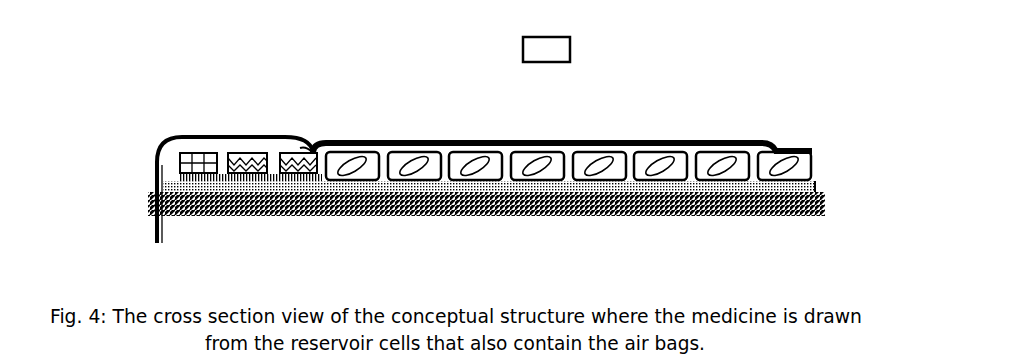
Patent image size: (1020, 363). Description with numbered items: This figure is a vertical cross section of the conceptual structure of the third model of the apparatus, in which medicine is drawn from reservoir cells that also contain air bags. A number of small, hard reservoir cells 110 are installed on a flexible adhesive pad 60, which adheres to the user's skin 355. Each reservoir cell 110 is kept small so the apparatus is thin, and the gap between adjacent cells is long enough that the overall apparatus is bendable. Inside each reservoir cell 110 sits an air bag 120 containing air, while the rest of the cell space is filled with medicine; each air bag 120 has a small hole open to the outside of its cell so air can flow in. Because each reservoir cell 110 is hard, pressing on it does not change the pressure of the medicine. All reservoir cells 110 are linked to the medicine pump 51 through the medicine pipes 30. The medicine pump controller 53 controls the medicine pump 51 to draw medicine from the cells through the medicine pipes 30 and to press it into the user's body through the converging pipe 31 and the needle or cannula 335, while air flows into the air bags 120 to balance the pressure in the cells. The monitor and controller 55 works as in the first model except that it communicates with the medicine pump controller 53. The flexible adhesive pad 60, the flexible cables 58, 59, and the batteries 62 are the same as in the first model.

The medicine pipes 30 is at (458, 138).
The converging pipe 31 is at (183, 126).
The medicine pump 51 is at (306, 138).
The medicine pump controller 53 is at (253, 141).
The monitor and controller 55 is at (585, 48).
The flexible cable 58 is at (172, 176).
The flexible cable 59 is at (270, 166).
The flexible adhesive pad 60 is at (825, 180).
The batteries 62 is at (207, 141).
The reservoir cells 110 is at (557, 190).
The air bag 120 is at (587, 170).
The needle or cannula 335 is at (150, 226).
The user's skin 355 is at (295, 221).